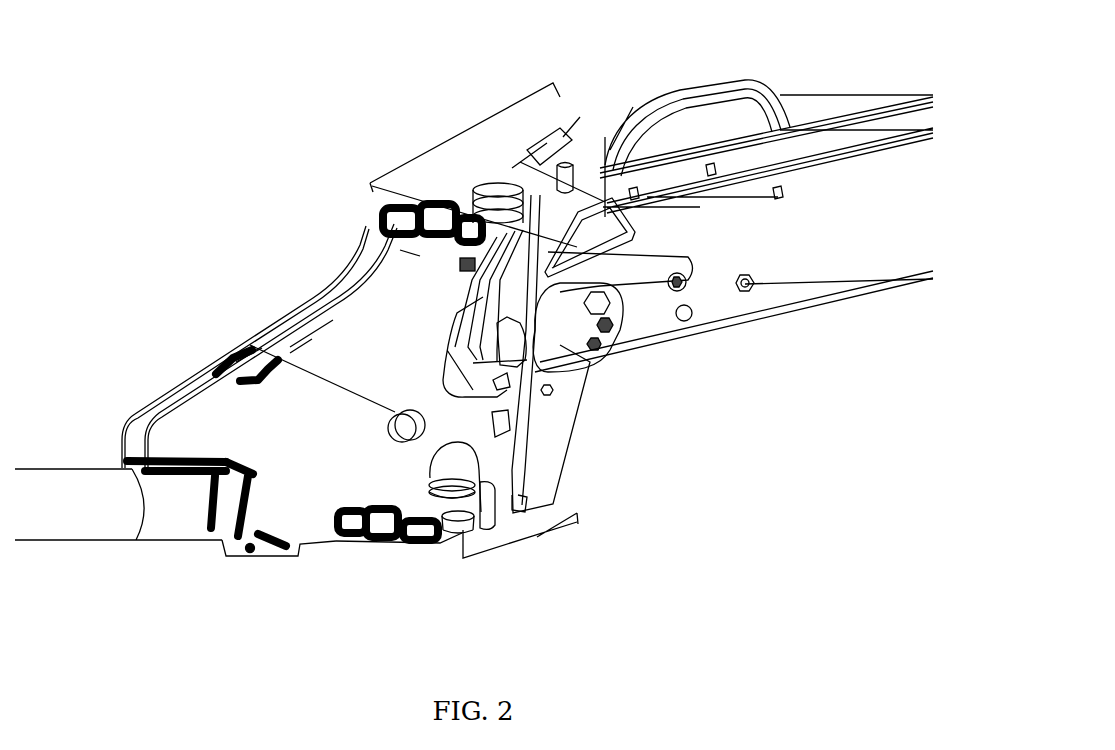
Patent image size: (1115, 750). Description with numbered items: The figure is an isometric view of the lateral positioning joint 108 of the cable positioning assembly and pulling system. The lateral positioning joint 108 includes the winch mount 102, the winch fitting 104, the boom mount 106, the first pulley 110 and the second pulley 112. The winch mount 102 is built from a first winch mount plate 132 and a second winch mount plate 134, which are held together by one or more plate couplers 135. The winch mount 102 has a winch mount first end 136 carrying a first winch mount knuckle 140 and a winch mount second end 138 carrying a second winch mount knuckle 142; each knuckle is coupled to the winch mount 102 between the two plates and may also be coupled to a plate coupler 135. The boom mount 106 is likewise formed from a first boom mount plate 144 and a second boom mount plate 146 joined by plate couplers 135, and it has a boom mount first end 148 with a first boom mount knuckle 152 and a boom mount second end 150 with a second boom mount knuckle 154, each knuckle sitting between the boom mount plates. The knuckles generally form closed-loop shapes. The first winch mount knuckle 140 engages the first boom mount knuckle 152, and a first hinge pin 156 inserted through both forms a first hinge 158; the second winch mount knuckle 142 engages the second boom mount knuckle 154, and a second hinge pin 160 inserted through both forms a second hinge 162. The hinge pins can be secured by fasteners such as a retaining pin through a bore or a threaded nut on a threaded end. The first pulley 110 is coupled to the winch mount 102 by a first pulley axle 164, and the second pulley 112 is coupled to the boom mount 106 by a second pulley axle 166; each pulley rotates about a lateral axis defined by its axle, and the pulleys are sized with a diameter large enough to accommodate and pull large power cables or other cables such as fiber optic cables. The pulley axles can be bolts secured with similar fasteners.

The winch mount 102 is at (244, 310).
The winch fitting 104 is at (175, 475).
The boom mount 106 is at (661, 382).
The lateral positioning joint 108 is at (254, 641).
The first pulley 110 is at (418, 302).
The second pulley 112 is at (653, 285).
The first winch mount plate 132 is at (228, 308).
The second winch mount plate 134 is at (141, 390).
The plate coupler 135 is at (423, 249).
The winch mount first end 136 is at (309, 218).
The winch mount second end 138 is at (217, 529).
The first winch mount knuckle 140 is at (290, 155).
The second winch mount knuckle 142 is at (449, 524).
The first boom mount plate 144 is at (734, 321).
The second boom mount plate 146 is at (581, 419).
The boom mount first end 148 is at (763, 172).
The boom mount second end 150 is at (669, 531).
The first boom mount knuckle 152 is at (766, 107).
The second boom mount knuckle 154 is at (608, 354).
The first hinge pin 156 is at (697, 114).
The first hinge 158 is at (438, 144).
The second hinge pin 160 is at (398, 558).
The second hinge 162 is at (620, 555).
The first pulley axle 164 is at (217, 312).
The second pulley axle 166 is at (834, 247).